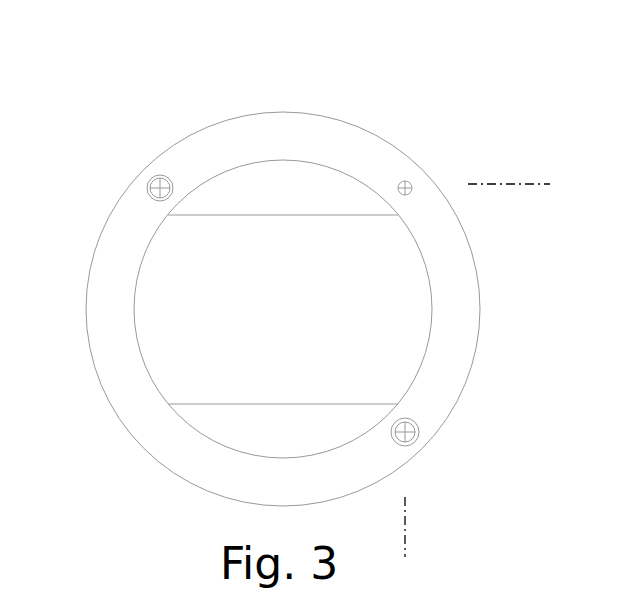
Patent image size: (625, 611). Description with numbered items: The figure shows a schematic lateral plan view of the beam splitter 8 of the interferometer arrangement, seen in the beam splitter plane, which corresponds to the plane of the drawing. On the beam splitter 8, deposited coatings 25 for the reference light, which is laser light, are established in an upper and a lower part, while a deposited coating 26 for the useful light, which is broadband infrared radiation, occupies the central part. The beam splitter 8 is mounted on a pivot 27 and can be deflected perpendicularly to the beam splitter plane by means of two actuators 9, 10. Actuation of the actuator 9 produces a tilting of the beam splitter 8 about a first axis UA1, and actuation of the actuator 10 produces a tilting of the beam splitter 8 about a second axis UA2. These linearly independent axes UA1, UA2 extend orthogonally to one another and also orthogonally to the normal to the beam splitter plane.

The beam splitter 8 is at (453, 350).
The actuator 9 is at (407, 433).
The actuator 10 is at (153, 180).
The deposited coatings 25 is at (310, 183).
The deposited coating 26 is at (173, 307).
The pivot 27 is at (408, 181).
The first axis UA1 is at (523, 175).
The second axis UA2 is at (427, 527).